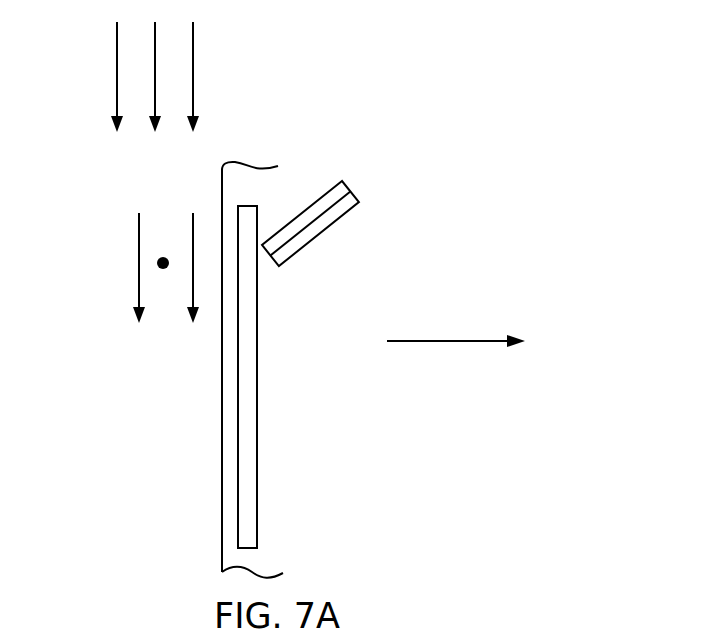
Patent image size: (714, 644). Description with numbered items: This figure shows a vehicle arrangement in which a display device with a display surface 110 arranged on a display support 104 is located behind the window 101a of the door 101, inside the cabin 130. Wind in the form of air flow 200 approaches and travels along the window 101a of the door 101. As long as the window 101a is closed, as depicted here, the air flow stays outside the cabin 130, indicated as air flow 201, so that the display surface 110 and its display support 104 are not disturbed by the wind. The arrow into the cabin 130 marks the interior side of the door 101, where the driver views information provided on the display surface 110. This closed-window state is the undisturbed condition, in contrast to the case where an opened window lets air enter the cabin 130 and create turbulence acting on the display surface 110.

The air flow 200 is at (117, 76).
The air flow 201 is at (157, 263).
The door 101 is at (232, 503).
The window 101a is at (250, 510).
The display support 104 is at (336, 188).
The display surface 110 is at (343, 206).
The cabin 130 is at (427, 141).